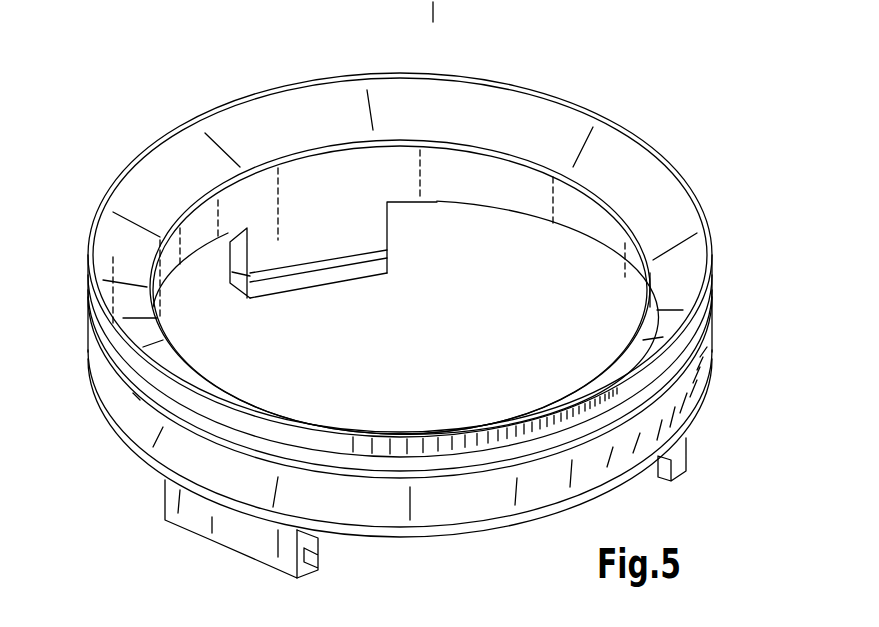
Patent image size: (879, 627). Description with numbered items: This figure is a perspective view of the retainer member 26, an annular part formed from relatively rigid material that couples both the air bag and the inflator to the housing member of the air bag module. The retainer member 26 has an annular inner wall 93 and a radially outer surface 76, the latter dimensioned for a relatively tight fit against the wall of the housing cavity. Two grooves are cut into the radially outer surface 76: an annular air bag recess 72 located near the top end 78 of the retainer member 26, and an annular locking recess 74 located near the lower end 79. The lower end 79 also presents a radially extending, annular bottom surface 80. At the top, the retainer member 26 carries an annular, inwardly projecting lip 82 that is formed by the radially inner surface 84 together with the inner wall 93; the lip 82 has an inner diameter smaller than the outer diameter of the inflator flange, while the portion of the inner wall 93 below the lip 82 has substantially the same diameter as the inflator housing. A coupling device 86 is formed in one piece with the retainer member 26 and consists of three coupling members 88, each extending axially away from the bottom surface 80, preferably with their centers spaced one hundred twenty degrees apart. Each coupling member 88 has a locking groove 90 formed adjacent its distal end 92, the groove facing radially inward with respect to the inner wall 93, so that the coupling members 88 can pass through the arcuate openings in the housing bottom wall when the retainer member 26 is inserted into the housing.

The retainer member 26 is at (697, 150).
The air bag recess 72 is at (690, 340).
The locking recess 74 is at (592, 466).
The radially outer surface 76 is at (133, 393).
The top end 78 is at (710, 245).
The lower end 79 is at (463, 530).
The bottom surface 80 is at (437, 203).
The lip 82 is at (300, 150).
The radially inner surface 84 is at (463, 130).
The coupling device 86 is at (155, 500).
The coupling member 88 is at (233, 543).
The locking groove 90 is at (233, 250).
The distal end 92 is at (337, 273).
The annular inner wall 93 is at (344, 186).